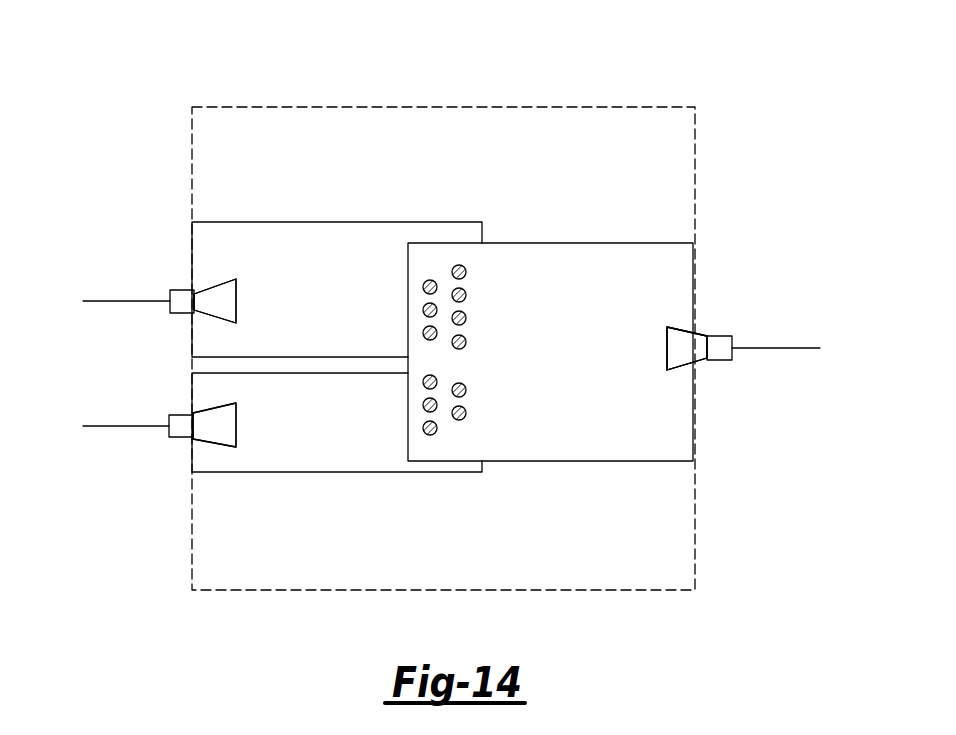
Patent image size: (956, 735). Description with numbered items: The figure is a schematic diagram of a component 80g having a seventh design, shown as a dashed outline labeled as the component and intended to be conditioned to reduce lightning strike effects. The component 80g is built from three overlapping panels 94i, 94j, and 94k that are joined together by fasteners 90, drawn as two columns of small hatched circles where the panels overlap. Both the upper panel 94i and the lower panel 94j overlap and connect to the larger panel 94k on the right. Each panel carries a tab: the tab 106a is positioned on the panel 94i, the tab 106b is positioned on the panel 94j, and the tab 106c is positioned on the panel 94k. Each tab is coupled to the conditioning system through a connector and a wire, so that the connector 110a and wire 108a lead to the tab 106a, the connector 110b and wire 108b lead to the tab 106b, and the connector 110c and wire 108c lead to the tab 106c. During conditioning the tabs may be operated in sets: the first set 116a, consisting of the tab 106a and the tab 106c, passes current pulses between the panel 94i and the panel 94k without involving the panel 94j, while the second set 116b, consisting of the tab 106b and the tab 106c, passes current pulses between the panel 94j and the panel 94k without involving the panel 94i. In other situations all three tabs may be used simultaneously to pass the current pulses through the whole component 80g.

The component 80g is at (445, 107).
The panel 94i is at (310, 222).
The panel 94j is at (357, 473).
The panel 94k is at (555, 463).
The fasteners 90 is at (466, 295).
The tab 106a is at (213, 280).
The tab 106b is at (213, 447).
The tab 106c is at (683, 327).
The first set 116a is at (450, 301).
The second set 116b is at (450, 392).
The wire 108a is at (97, 298).
The wire 108b is at (97, 425).
The wire 108c is at (800, 347).
The connector 110a is at (178, 288).
The connector 110b is at (177, 438).
The connector 110c is at (718, 337).